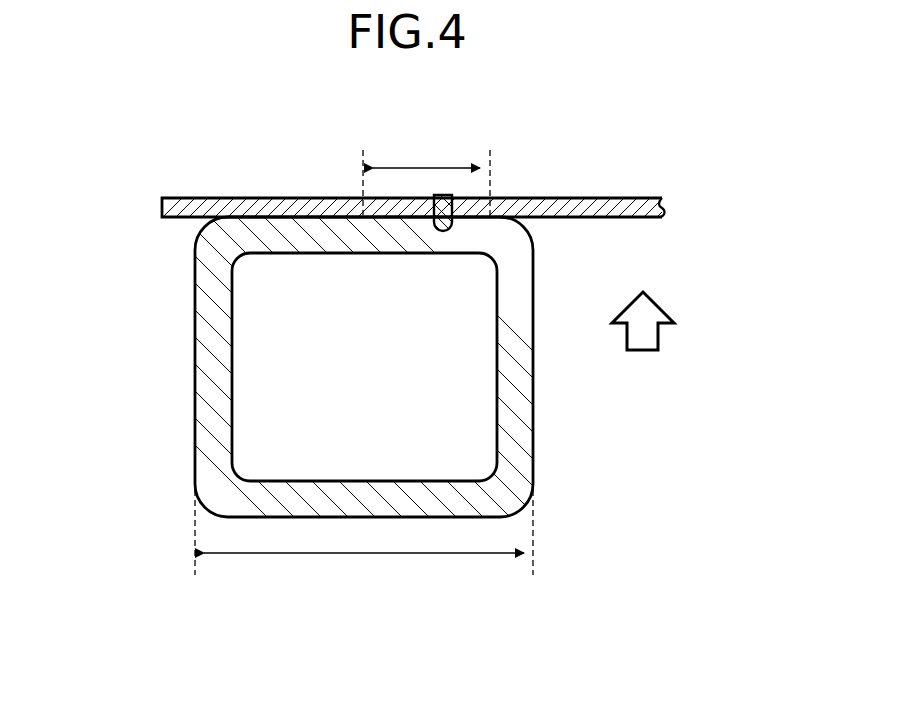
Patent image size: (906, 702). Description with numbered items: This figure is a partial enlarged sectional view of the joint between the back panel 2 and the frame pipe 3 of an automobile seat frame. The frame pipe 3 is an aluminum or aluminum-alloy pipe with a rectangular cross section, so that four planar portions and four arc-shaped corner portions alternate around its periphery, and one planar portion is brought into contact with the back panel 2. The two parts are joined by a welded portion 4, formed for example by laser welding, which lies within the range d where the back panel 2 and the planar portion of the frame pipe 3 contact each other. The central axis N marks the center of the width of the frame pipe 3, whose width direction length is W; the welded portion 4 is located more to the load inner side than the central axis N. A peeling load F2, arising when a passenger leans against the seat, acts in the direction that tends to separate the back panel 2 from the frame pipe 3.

The back panel 2 is at (174, 197).
The frame pipe 3 is at (188, 372).
The welded portion 4 is at (443, 197).
The range d is at (410, 162).
The central axis N is at (363, 162).
The width direction length W is at (364, 532).
The peeling load F2 is at (658, 333).